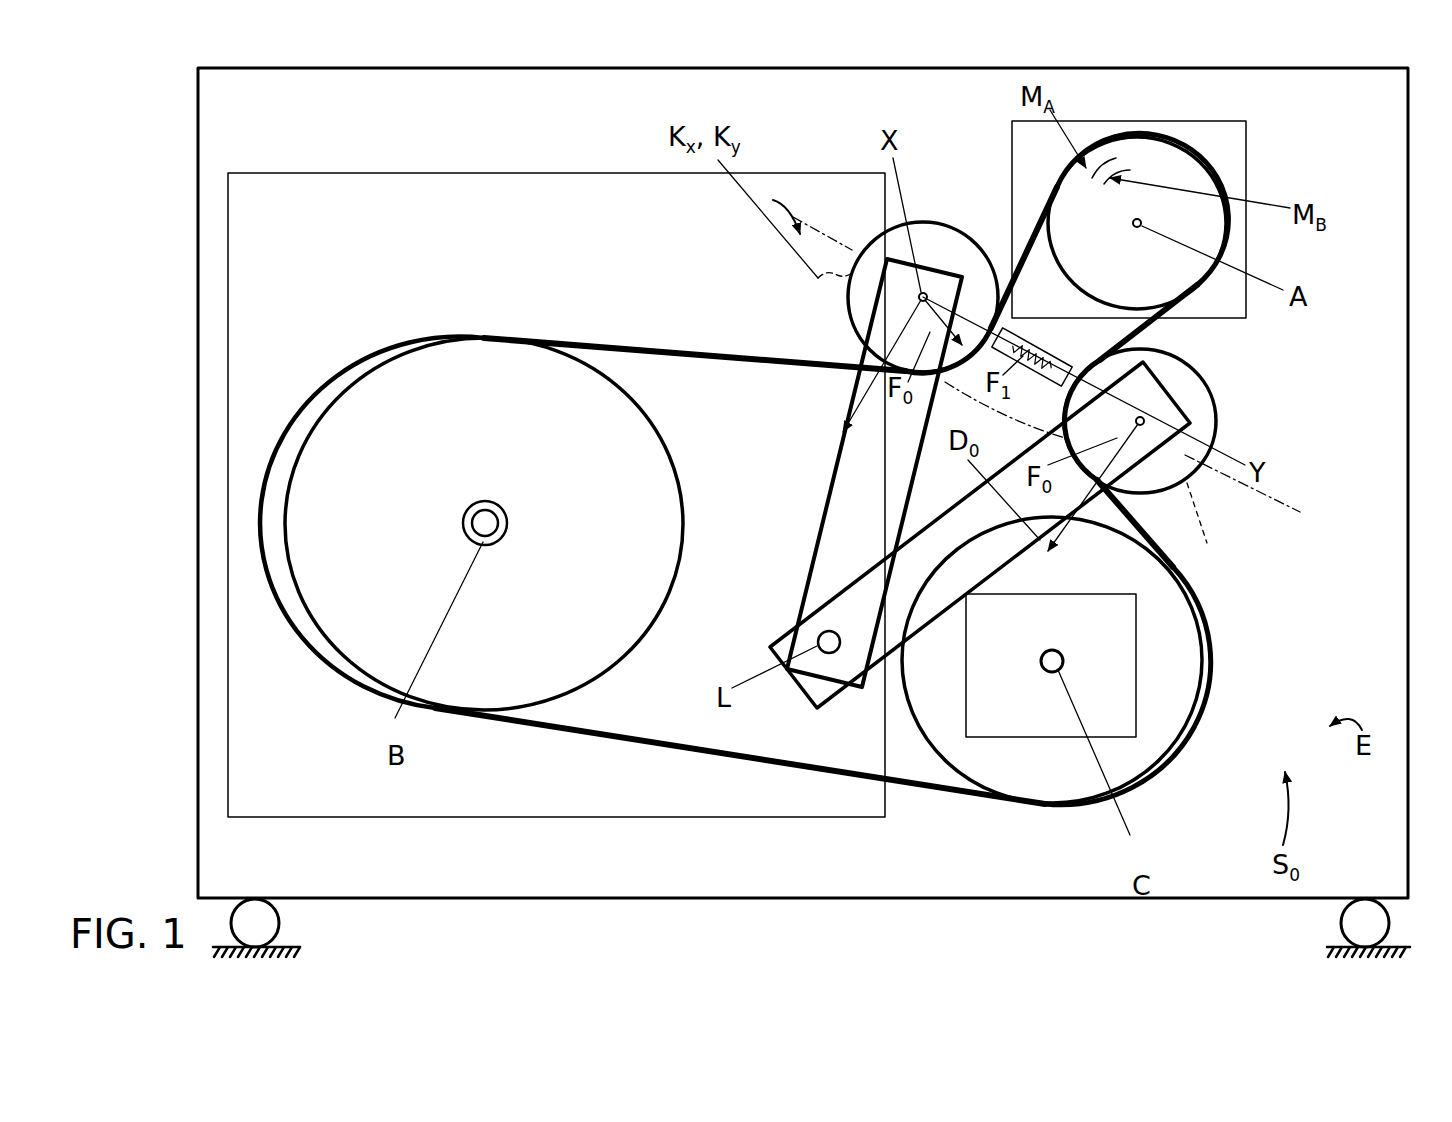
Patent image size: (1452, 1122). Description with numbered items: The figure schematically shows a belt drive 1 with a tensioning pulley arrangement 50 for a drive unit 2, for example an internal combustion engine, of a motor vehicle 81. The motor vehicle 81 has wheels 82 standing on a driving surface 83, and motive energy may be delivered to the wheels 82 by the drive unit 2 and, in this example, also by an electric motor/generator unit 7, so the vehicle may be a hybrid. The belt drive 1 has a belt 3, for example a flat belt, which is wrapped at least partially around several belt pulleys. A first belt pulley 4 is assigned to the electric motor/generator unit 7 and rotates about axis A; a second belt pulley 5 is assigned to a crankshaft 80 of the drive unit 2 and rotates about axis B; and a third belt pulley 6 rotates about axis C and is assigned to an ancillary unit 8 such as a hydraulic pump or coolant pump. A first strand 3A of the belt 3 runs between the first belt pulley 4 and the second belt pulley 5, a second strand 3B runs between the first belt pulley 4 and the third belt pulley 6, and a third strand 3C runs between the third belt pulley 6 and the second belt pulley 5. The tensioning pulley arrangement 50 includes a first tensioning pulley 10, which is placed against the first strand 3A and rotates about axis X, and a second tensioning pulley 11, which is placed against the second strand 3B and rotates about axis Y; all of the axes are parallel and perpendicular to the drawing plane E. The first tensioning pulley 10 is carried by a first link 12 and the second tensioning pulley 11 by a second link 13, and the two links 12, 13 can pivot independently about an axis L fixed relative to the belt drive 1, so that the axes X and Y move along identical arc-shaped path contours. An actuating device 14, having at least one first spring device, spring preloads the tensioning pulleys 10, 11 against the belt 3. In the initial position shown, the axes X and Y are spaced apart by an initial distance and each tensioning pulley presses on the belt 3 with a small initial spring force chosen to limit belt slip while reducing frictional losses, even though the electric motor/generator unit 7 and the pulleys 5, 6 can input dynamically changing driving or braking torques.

The belt drive 1 is at (512, 208).
The drive unit 2 is at (562, 818).
The belt 3 is at (728, 352).
The first strand 3A is at (1027, 240).
The second strand 3B is at (1160, 340).
The third strand 3C is at (903, 783).
The first belt pulley 4 is at (1150, 162).
The second belt pulley 5 is at (400, 617).
The third belt pulley 6 is at (1164, 712).
The electric motor/generator unit 7 is at (1235, 158).
The ancillary unit 8 is at (1132, 617).
The first tensioning pulley 10 is at (873, 235).
The second tensioning pulley 11 is at (1215, 428).
The first link 12 is at (822, 508).
The second link 13 is at (1150, 463).
The actuating device 14 is at (1020, 315).
The tensioning pulley arrangement 50 is at (787, 203).
The crankshaft 80 is at (463, 521).
The motor vehicle 81 is at (204, 73).
The wheels 82 is at (280, 917).
The driving surface 83 is at (232, 946).